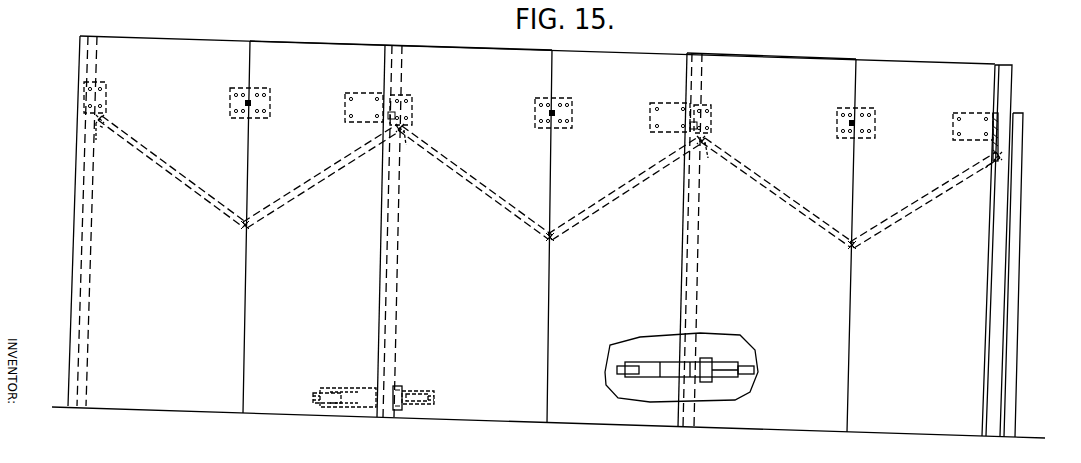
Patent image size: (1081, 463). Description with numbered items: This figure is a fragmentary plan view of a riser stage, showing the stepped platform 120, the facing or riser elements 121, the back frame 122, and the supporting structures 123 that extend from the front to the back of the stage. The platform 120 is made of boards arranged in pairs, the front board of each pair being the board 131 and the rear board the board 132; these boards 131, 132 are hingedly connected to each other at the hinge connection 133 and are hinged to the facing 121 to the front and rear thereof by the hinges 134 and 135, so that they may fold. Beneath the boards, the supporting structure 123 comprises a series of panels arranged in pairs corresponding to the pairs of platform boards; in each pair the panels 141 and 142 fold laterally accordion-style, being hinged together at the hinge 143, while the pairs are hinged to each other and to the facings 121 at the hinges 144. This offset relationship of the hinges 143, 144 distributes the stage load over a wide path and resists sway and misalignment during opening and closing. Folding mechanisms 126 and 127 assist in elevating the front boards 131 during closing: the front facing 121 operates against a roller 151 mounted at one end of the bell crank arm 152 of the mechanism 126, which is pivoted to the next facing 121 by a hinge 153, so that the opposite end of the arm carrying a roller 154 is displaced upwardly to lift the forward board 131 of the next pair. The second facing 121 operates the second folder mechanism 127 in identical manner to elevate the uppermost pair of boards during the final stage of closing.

The stepped platform 120 is at (362, 42).
The facing or riser element 121 is at (97, 73).
The back frame 122 is at (1023, 231).
The supporting structure 123 is at (848, 244).
The folding mechanism 126 is at (340, 388).
The folding mechanism 127 is at (643, 362).
The front board 131 is at (194, 44).
The rear board 132 is at (292, 47).
The hinge connection 133 is at (268, 110).
The hinge 134 is at (83, 98).
The hinge 135 is at (986, 120).
The panel 141 is at (162, 157).
The panel 142 is at (297, 192).
The hinge 143 is at (238, 213).
The hinge 144 is at (98, 128).
The roller 151 is at (315, 393).
The bell crank arm 152 is at (353, 405).
The hinge 153 is at (398, 390).
The roller 154 is at (437, 400).